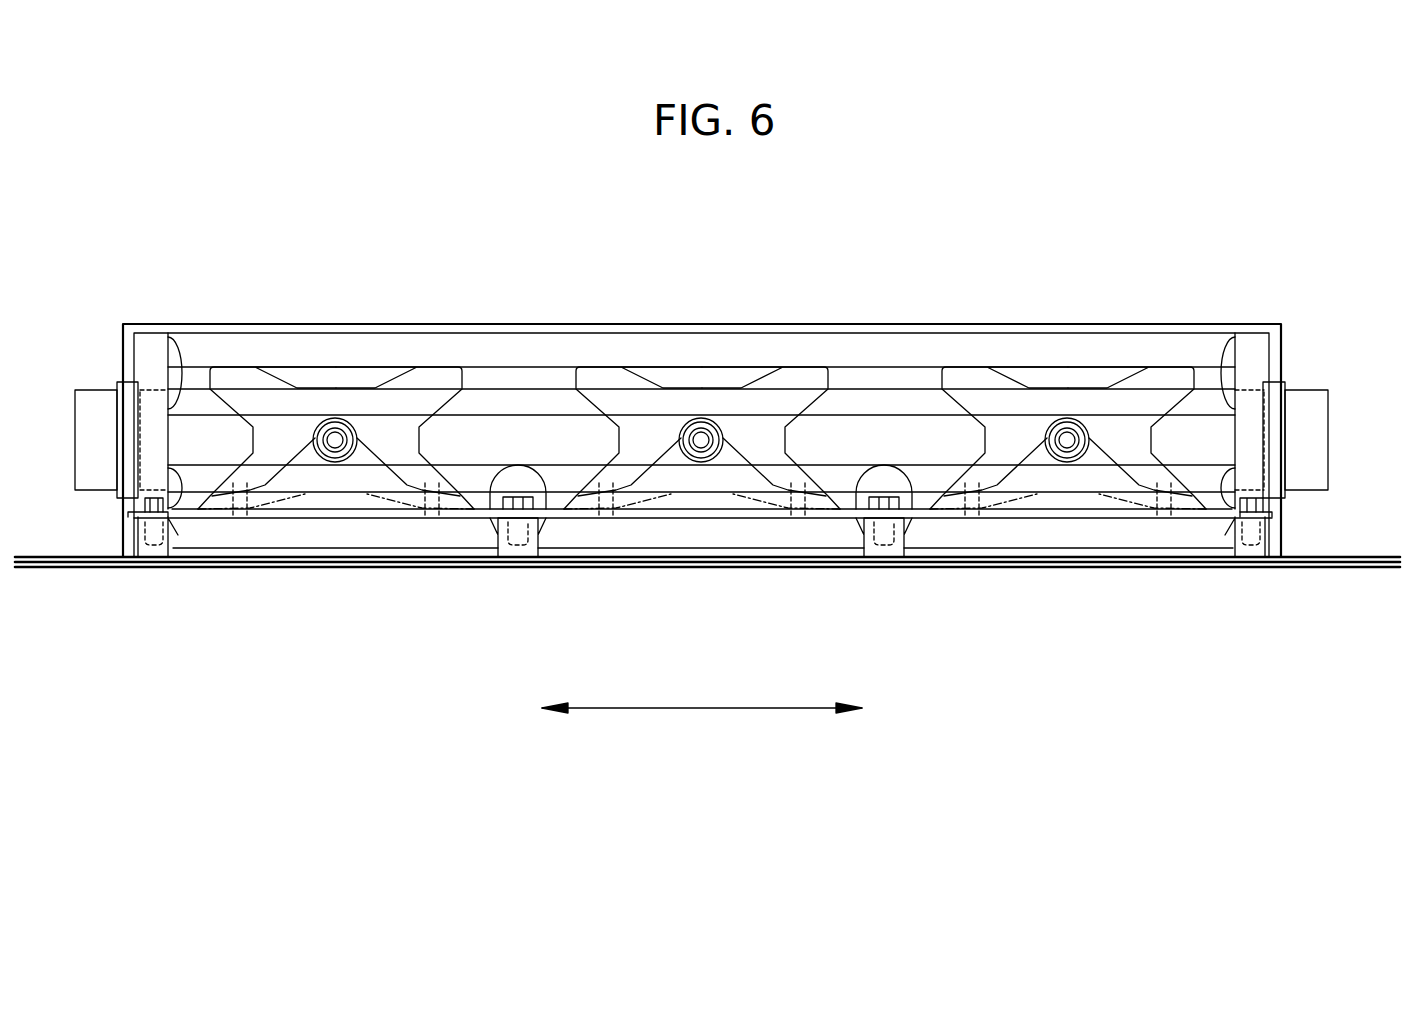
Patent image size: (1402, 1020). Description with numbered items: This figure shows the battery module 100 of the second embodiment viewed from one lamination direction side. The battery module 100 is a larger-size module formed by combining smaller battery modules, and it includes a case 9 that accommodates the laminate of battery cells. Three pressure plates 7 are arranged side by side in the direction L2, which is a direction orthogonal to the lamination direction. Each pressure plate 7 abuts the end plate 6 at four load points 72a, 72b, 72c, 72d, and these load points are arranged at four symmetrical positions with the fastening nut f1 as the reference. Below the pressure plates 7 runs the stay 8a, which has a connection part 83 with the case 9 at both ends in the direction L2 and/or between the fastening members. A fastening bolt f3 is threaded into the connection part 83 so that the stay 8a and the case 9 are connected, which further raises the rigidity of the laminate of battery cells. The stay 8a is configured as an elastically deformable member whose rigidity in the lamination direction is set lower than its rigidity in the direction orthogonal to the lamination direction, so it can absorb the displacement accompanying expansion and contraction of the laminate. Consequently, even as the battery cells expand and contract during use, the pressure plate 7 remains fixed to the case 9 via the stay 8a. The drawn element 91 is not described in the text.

The battery module 100 is at (1018, 200).
The end plate 6 is at (1160, 345).
The pressure plate 7 is at (334, 358).
The load point 72a is at (233, 368).
The load point 72b is at (432, 368).
The load point 72c is at (233, 483).
The load point 72d is at (432, 485).
The fastening nut f1 is at (333, 460).
The fastening bolt f3 is at (1248, 498).
The stay 8a is at (965, 540).
The connection part 83 is at (1238, 514).
The bracket 91 is at (1252, 548).
The case 9 is at (120, 596).
The direction L2 is at (710, 709).